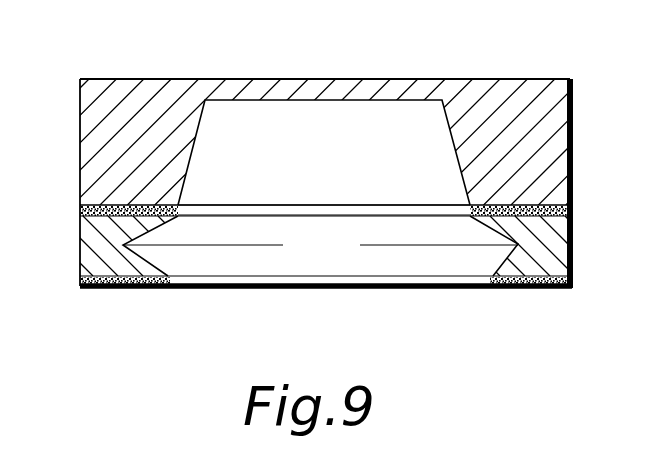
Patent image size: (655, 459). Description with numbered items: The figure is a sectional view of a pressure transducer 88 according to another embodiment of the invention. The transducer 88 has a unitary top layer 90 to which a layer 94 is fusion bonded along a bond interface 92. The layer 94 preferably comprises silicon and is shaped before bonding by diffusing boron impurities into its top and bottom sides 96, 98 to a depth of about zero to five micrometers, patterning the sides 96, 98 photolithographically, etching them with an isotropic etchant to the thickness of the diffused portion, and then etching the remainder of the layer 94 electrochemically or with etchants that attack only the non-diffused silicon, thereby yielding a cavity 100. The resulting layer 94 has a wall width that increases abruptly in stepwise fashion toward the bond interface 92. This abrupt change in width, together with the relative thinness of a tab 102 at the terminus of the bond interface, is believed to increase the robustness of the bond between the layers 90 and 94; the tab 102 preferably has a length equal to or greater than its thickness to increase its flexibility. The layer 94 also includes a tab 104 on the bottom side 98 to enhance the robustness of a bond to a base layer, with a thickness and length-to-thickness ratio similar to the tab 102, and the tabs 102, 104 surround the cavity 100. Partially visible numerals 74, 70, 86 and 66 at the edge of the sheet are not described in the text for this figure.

The transducer 88 is at (198, 73).
The unitary top layer 90 is at (80, 113).
The bond interface 92 is at (120, 205).
The layer 94 is at (80, 263).
The top side 96 is at (377, 204).
The bottom side 98 is at (402, 289).
The cavity 100 is at (350, 255).
The tab 102 is at (163, 216).
The tab 104 is at (171, 285).
The layer 74 is at (6, 118).
The layer 70 is at (3, 127).
The layer 86 is at (7, 244).
The layer 66 is at (13, 300).